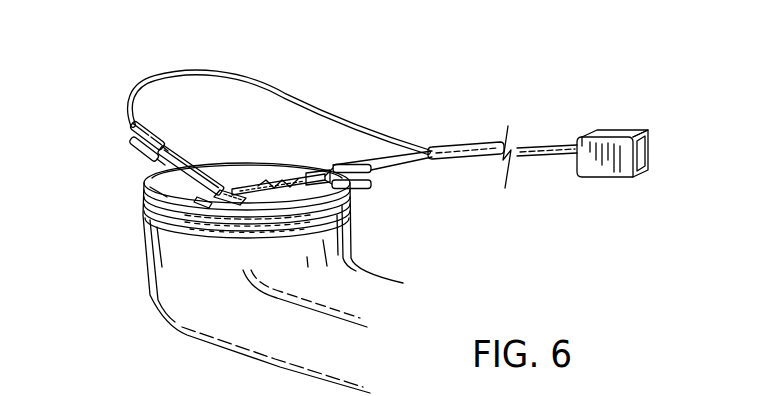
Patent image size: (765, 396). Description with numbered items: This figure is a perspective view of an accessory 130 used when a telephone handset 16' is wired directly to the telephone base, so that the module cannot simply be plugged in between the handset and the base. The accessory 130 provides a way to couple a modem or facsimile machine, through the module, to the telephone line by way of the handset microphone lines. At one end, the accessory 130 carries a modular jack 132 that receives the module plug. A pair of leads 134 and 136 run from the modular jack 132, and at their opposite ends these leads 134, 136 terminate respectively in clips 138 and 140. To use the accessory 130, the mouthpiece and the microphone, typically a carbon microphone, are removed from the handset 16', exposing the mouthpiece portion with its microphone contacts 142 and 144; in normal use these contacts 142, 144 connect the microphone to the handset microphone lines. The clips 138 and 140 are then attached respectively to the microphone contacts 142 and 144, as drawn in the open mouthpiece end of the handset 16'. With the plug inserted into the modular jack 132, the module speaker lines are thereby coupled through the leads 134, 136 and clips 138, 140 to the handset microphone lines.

The handset 16' is at (251, 278).
The accessory 130 is at (460, 142).
The modular jack 132 is at (612, 131).
The lead 134 is at (398, 167).
The lead 136 is at (393, 143).
The clip 138 is at (333, 172).
The clip 140 is at (152, 162).
The microphone contact 142 is at (247, 187).
The microphone contact 144 is at (230, 200).